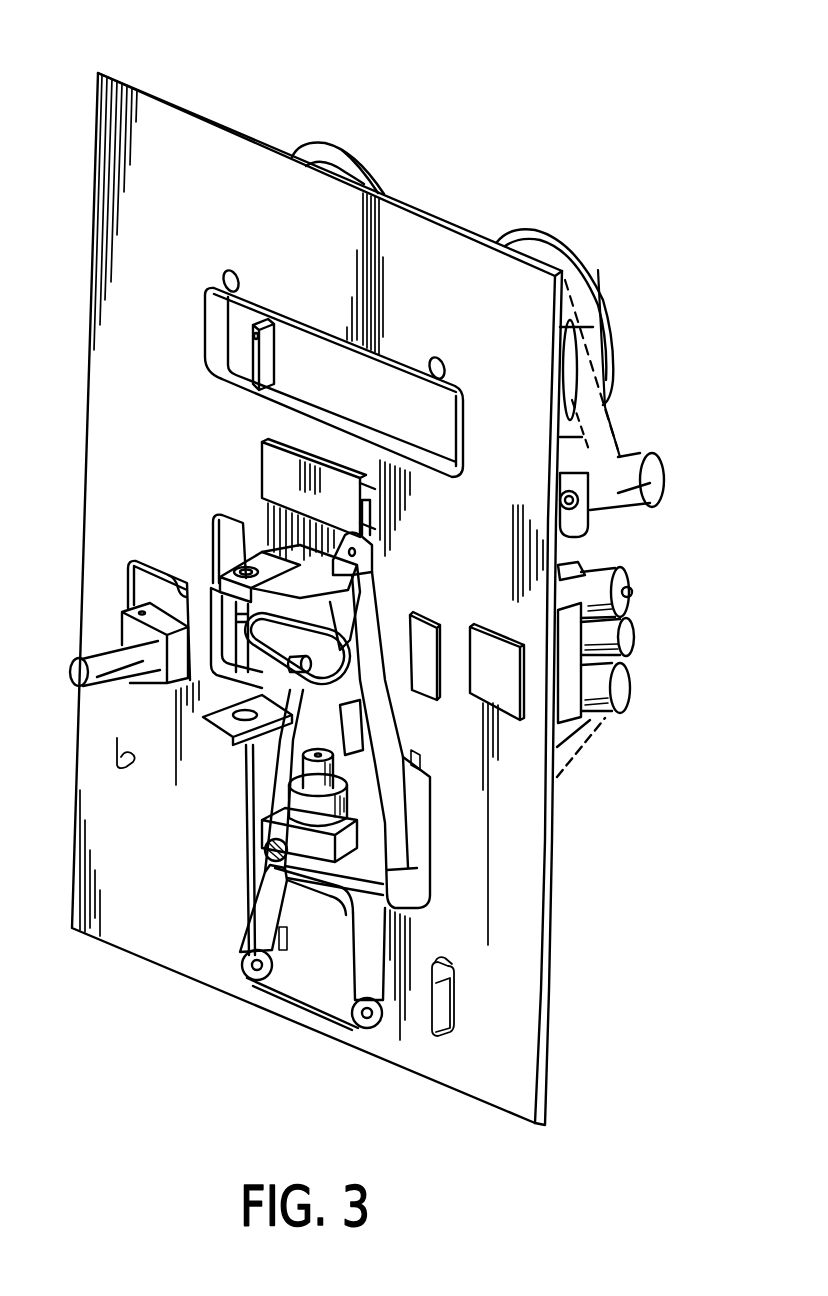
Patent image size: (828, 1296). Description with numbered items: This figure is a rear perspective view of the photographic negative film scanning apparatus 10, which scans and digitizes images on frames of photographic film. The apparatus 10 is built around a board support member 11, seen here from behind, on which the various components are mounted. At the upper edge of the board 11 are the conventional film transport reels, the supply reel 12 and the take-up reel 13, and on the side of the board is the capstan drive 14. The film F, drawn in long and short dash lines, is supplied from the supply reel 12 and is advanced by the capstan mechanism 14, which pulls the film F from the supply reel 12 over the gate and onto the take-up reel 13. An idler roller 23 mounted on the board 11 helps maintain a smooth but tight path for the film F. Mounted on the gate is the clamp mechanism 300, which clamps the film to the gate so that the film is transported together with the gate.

The photographic negative film scanning apparatus 10 is at (277, 100).
The board support member 11 is at (172, 164).
The film transport supply reel 12 is at (338, 165).
The film transport take-up reel 13 is at (510, 240).
The capstan drive 14 is at (645, 672).
The idler roller 23 is at (640, 462).
The clamp mechanism 300 is at (262, 797).
The film F is at (600, 422).